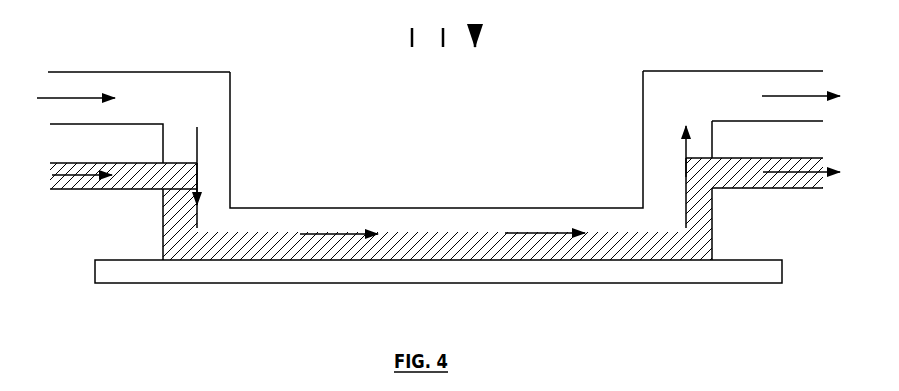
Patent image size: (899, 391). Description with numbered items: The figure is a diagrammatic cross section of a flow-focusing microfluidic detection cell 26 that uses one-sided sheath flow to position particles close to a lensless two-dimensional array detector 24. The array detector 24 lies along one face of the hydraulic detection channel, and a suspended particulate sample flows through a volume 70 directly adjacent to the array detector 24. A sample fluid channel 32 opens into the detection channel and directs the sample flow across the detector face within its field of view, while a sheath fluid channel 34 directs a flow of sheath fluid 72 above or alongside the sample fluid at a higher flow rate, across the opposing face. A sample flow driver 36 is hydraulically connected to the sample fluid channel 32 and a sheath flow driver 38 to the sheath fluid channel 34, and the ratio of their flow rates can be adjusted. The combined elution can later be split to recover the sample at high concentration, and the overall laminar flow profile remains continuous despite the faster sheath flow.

The two-dimensional array detector 24 is at (326, 283).
The microfluidic detection cell 26 is at (130, 197).
The sample fluid channel 32 is at (90, 72).
The sheath fluid channel 34 is at (92, 189).
The sample flow driver 36 is at (62, 97).
The sheath flow driver 38 is at (52, 176).
The volume 70 is at (437, 255).
The sheath fluid 72 is at (177, 106).